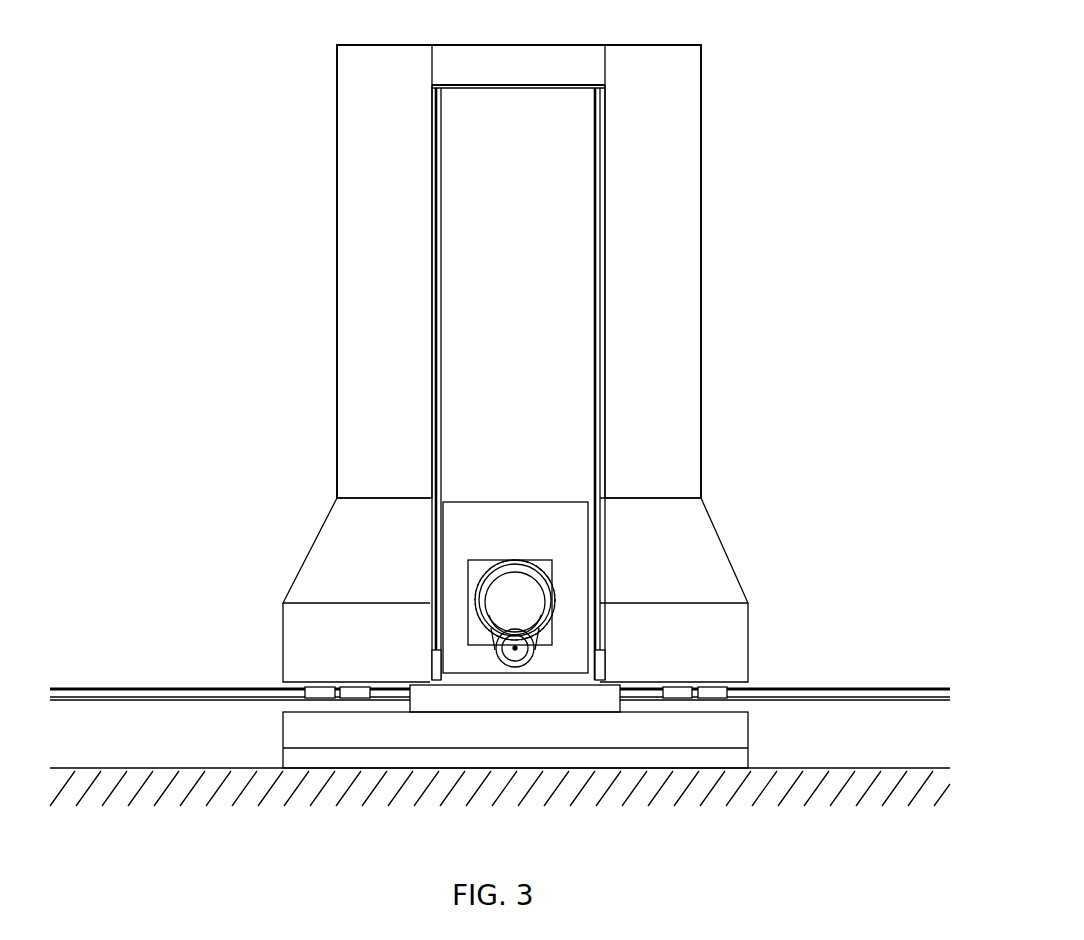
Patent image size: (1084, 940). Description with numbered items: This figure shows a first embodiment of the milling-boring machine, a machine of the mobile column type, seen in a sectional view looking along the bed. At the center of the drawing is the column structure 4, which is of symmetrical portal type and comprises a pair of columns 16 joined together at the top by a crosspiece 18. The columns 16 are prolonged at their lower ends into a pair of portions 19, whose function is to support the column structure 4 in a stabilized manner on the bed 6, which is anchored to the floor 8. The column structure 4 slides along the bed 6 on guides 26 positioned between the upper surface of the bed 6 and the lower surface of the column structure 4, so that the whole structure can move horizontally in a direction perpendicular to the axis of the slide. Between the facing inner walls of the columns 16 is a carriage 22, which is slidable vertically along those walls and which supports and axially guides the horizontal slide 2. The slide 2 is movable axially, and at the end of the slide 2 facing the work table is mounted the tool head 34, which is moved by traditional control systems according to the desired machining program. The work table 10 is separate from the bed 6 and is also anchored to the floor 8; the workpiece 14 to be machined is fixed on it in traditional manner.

The horizontal slide 2 is at (478, 572).
The column structure 4 is at (702, 183).
The bed 6 is at (842, 727).
The floor 8 is at (150, 783).
The work table 10 is at (652, 730).
The workpiece 14 is at (455, 698).
The columns 16 is at (375, 286).
The crosspiece 18 is at (543, 61).
The portions 19 is at (680, 563).
The carriage 22 is at (462, 522).
The guides 26 is at (135, 688).
The tool head 34 is at (522, 572).